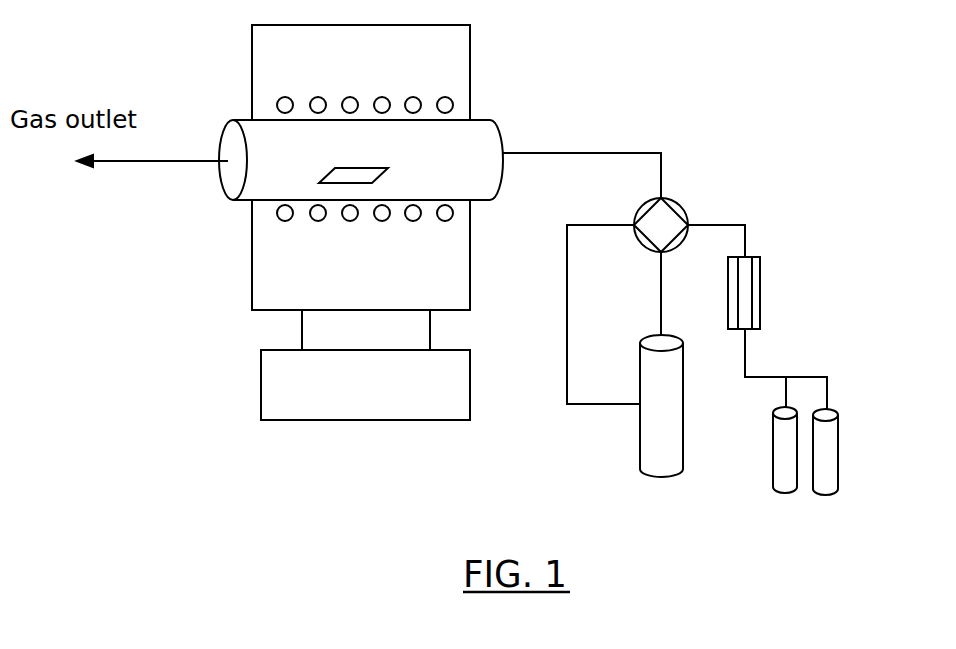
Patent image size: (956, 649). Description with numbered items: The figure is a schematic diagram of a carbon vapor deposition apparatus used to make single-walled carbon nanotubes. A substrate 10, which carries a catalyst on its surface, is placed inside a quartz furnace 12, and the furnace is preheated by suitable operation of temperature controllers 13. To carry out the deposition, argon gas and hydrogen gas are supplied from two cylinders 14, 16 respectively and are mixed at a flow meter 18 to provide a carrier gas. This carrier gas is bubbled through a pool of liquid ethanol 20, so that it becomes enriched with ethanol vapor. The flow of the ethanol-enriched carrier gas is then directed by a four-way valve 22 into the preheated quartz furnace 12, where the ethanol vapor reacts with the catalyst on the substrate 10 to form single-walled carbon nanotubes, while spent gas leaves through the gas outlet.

The substrate 10 is at (332, 172).
The quartz furnace 12 is at (477, 120).
The temperature controllers 13 is at (261, 392).
The cylinder 14 is at (773, 462).
The cylinder 16 is at (838, 462).
The flow meter 18 is at (760, 282).
The pool of liquid ethanol 20 is at (642, 422).
The 4-way valve 22 is at (672, 197).